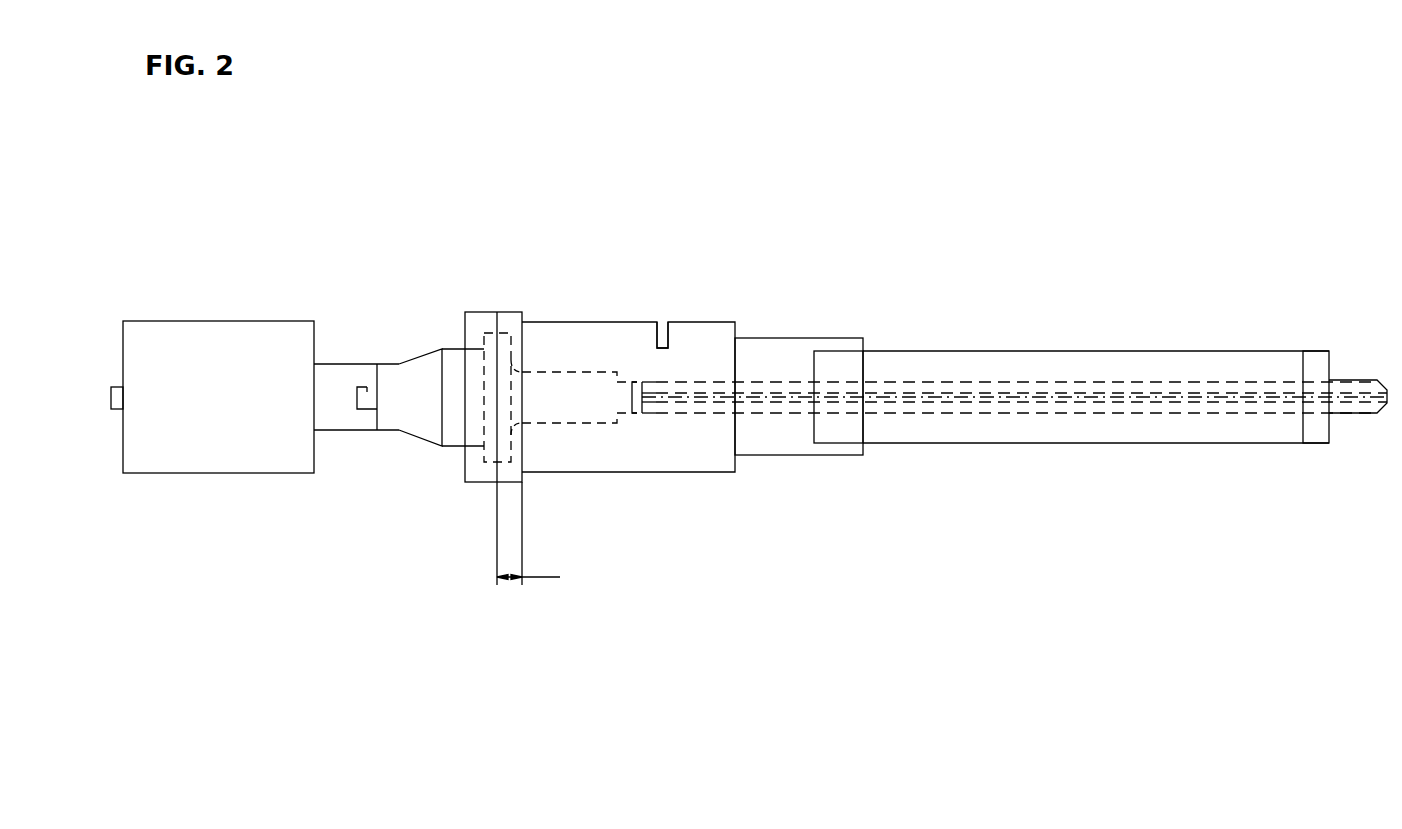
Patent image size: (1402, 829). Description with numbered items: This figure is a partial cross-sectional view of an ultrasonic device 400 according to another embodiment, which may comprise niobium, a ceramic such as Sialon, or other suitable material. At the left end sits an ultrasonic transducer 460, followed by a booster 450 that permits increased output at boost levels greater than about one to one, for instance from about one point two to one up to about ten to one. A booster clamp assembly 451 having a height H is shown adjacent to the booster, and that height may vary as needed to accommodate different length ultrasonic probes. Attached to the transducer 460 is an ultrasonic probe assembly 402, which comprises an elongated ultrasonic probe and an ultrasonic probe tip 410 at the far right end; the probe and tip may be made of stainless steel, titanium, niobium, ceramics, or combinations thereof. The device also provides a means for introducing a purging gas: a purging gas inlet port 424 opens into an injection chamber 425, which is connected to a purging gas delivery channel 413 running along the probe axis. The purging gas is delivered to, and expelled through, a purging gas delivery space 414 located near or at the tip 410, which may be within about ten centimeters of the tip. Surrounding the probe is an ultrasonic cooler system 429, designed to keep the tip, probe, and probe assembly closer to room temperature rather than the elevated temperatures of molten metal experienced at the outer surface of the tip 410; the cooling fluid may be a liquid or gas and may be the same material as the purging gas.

The ultrasonic device 400 is at (869, 129).
The ultrasonic transducer 460 is at (225, 376).
The booster 450 is at (458, 352).
The booster clamp assembly 451 is at (549, 451).
The injection chamber 425 is at (685, 450).
The purging gas inlet port 424 is at (735, 296).
The ultrasonic probe assembly 402 is at (1009, 371).
The purging gas delivery channel 413 is at (1014, 353).
The ultrasonic cooler system 429 is at (1071, 441).
The purging gas delivery space 414 is at (1340, 419).
The ultrasonic probe tip 410 is at (1292, 356).